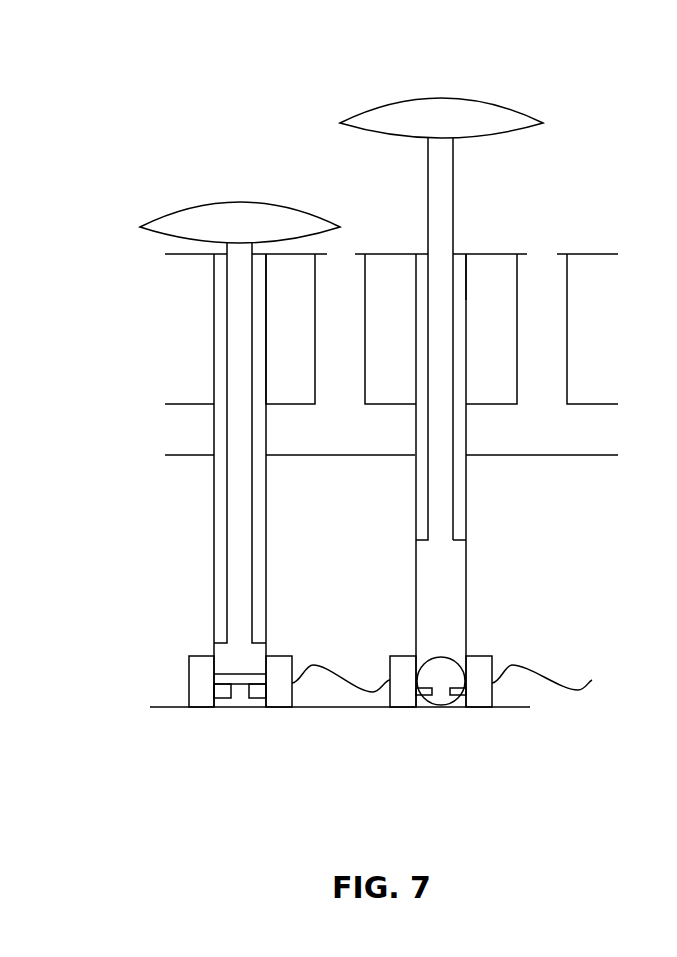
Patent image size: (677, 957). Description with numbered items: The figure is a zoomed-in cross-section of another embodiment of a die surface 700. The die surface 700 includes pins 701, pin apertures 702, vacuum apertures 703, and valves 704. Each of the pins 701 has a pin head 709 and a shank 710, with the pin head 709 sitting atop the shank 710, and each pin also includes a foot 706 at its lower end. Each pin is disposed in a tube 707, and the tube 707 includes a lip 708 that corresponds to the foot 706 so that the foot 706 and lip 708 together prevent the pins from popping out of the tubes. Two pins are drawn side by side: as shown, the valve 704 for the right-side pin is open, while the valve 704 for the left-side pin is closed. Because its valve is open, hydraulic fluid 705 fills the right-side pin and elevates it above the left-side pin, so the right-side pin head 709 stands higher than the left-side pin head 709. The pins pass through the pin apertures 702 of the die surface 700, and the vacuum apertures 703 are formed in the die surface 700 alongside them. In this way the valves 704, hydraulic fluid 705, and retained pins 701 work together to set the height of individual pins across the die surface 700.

The die surface 700 is at (203, 108).
The pins 701 is at (374, 160).
The pin apertures 702 is at (421, 244).
The vacuum apertures 703 is at (543, 246).
The valves 704 is at (240, 717).
The hydraulic fluid 705 is at (242, 618).
The foot 706 is at (460, 543).
The tube 707 is at (466, 497).
The lip 708 is at (461, 253).
The pin heads 709 is at (441, 118).
The shanks 710 is at (455, 162).